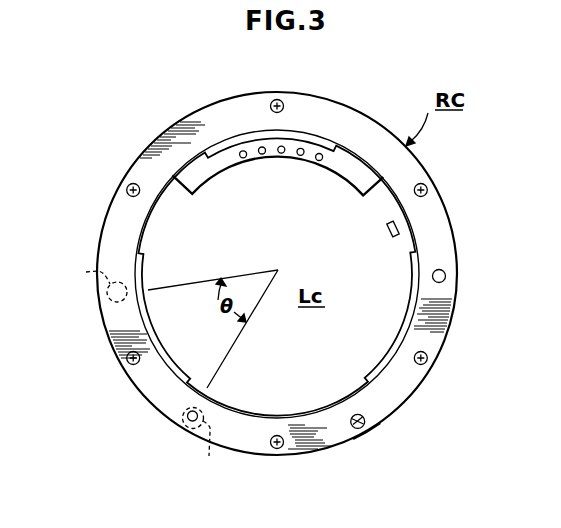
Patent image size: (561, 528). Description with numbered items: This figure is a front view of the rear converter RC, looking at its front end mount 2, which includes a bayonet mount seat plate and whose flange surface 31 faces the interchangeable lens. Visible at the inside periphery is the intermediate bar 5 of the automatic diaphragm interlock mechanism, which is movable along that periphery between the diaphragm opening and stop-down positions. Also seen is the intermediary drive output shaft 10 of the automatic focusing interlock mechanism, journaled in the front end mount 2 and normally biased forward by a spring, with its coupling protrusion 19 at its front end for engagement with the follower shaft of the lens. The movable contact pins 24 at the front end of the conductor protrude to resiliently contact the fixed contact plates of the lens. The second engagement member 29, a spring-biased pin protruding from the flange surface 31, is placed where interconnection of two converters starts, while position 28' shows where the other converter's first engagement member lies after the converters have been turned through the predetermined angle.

The front end mount 2 is at (445, 322).
The flange surface 31 is at (441, 243).
The movable contact pins 24 is at (281, 156).
The intermediate bar 5 is at (399, 227).
The coupling protrusion 19 is at (352, 429).
The intermediary drive output shaft 10 is at (368, 427).
The second engagement member 29 is at (187, 419).
The position of the first engagement member 28' is at (86, 286).